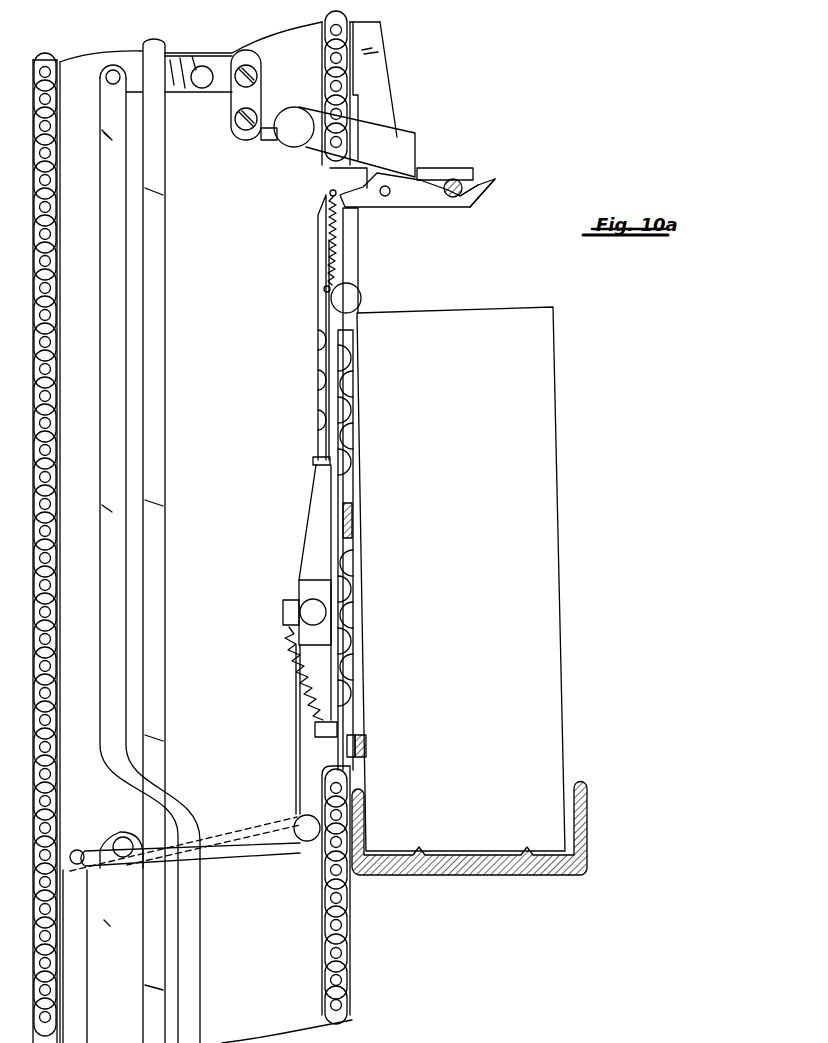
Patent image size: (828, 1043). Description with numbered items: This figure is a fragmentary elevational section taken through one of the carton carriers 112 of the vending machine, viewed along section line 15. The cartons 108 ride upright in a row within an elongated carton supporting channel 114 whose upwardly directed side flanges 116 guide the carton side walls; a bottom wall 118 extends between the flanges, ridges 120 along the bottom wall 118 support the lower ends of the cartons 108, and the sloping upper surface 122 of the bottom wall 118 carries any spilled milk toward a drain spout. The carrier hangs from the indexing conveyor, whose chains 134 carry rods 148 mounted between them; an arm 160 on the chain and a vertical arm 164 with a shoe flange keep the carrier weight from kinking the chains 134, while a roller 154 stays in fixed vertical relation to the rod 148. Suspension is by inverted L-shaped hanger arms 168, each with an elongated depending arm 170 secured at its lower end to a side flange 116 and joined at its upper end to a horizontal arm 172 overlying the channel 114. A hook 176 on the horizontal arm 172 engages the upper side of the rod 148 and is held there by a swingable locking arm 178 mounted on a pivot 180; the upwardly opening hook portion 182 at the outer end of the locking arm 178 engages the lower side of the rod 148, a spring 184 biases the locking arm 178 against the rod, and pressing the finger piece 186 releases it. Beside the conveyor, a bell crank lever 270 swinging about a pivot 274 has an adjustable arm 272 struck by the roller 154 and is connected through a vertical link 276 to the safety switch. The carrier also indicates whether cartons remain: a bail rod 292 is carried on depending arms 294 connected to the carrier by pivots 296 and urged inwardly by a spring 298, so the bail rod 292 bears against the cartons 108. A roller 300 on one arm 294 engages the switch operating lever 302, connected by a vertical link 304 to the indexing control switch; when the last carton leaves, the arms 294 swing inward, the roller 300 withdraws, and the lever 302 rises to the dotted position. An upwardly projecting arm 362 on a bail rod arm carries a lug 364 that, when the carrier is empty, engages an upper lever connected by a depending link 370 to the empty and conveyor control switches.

The section line 15- 15 is at (593, 112).
The carton 108 is at (565, 600).
The carton carrier 112 is at (606, 858).
The carton supporting channel 114 is at (590, 797).
The side flange 116 is at (365, 808).
The bottom wall 118 is at (456, 869).
The ridge 120 is at (421, 860).
The upper surface 122 is at (476, 853).
The chain 134 is at (52, 522).
The rod 148 is at (459, 180).
The roller 154 is at (293, 107).
The arm 160 is at (318, 145).
The vertical arm 164 is at (374, 34).
The hanger arm 168 is at (317, 217).
The depending arm 170 is at (333, 305).
The horizontal arm 172 is at (357, 212).
The hook 176 is at (448, 175).
The locking arm 178 is at (433, 208).
The pivot 180 is at (386, 186).
The hook portion 182 is at (476, 195).
The spring 184 is at (327, 250).
The finger piece 186 is at (495, 181).
The bell crank lever 270 is at (220, 95).
The adjustable arm 272 is at (260, 141).
The pivot 274 is at (203, 66).
The vertical link 276 is at (108, 226).
The bail rod 292 is at (368, 747).
The depending arm 294 is at (298, 750).
The pivot 296 is at (300, 606).
The spring 298 is at (292, 655).
The roller 300 is at (305, 845).
The switch operating lever 302 is at (240, 858).
The vertical link 304 is at (80, 975).
The upwardly projecting arm 362 is at (306, 521).
The lug 364 is at (313, 462).
The depending link 370 is at (160, 246).